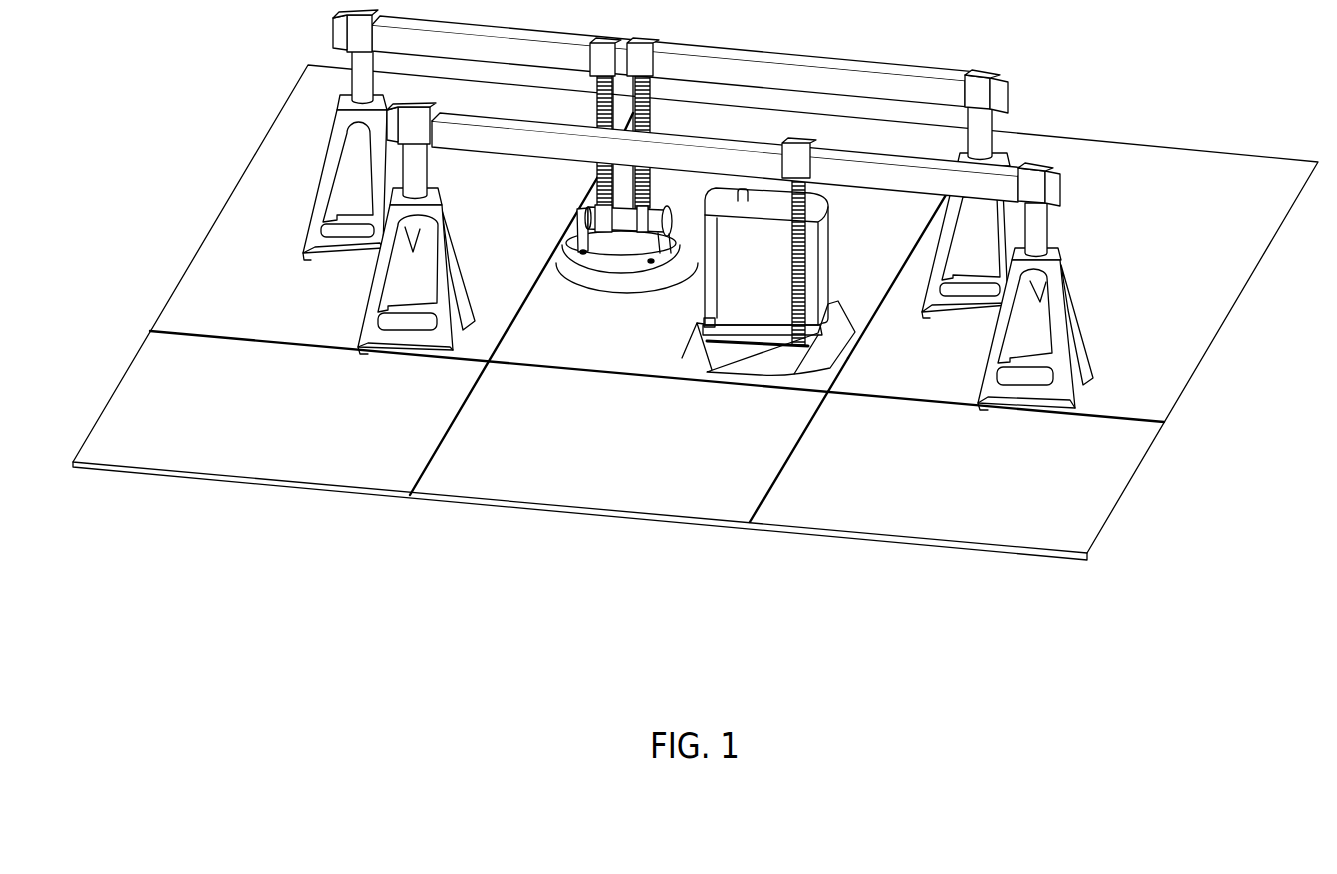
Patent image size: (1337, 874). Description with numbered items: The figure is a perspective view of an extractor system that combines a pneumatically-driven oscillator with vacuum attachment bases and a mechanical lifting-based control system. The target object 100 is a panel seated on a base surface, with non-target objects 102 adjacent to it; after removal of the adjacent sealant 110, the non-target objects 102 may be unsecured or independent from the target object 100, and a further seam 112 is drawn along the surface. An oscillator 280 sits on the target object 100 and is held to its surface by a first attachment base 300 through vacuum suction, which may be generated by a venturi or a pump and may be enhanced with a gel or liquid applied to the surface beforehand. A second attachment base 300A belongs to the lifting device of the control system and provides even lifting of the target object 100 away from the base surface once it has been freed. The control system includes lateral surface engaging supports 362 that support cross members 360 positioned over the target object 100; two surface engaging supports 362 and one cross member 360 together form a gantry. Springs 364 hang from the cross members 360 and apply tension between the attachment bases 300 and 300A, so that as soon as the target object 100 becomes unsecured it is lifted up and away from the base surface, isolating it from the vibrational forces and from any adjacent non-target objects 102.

The target object 100 is at (565, 350).
The non-target object 102 is at (485, 484).
The adjacent sealant 110 is at (846, 358).
The seam / strip of mounting surface 112 is at (795, 457).
The oscillator 280 is at (780, 287).
The first attachment base 300 is at (728, 357).
The second attachment base 300A is at (587, 272).
The cross member 360 is at (899, 62).
The surface engaging support 362 is at (1064, 302).
The spring 364 is at (651, 108).